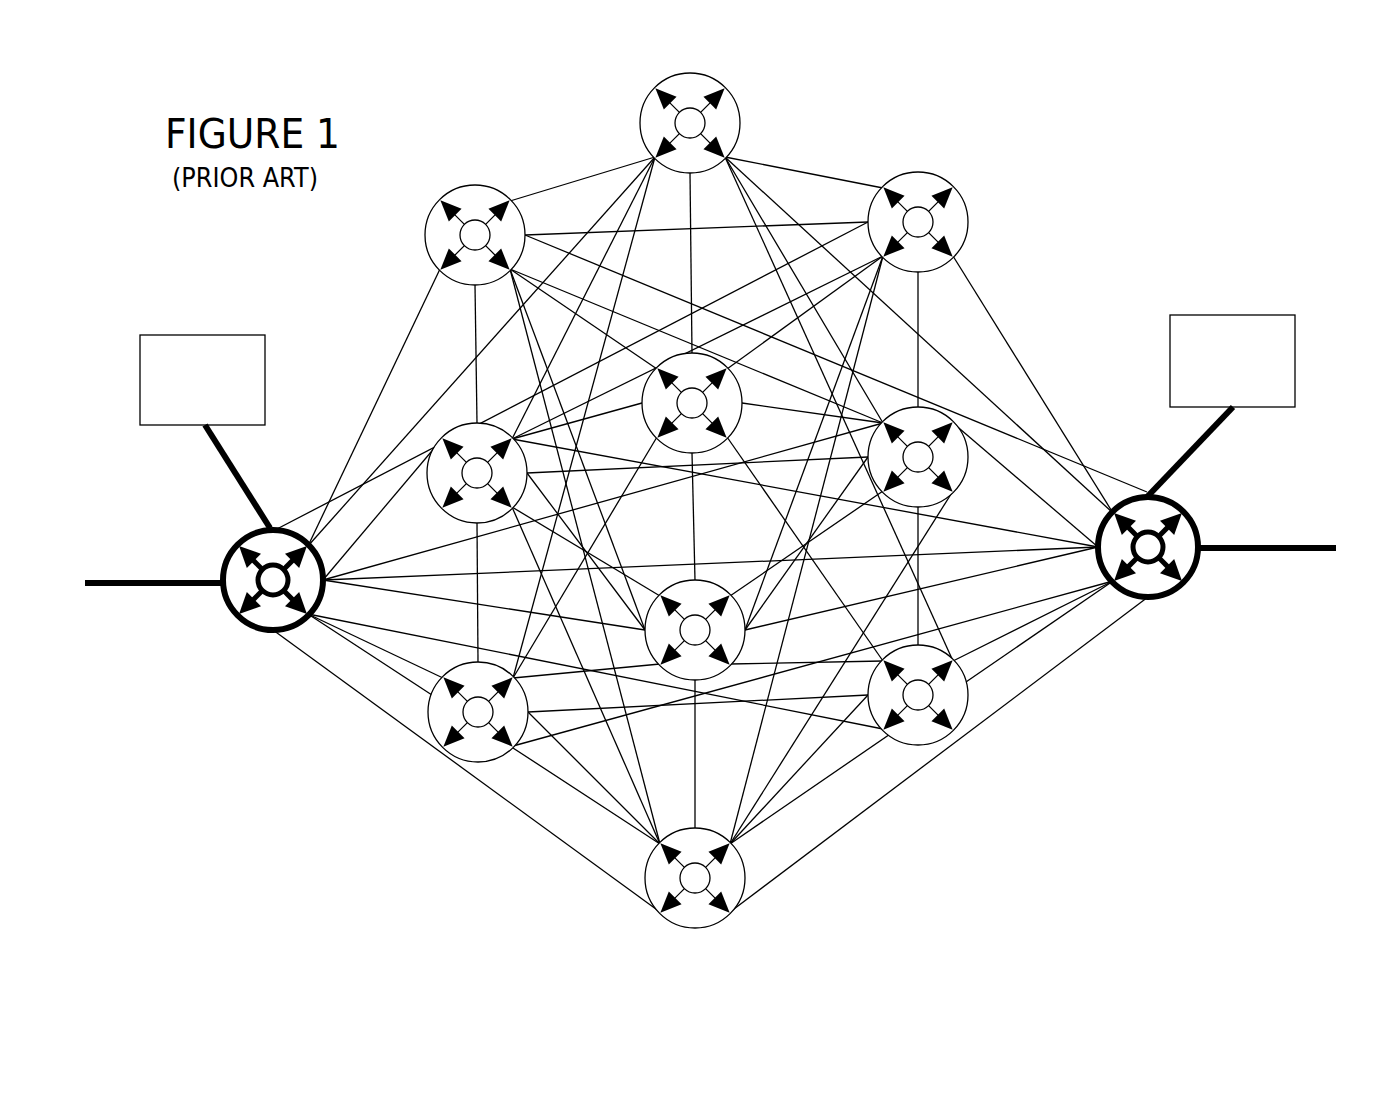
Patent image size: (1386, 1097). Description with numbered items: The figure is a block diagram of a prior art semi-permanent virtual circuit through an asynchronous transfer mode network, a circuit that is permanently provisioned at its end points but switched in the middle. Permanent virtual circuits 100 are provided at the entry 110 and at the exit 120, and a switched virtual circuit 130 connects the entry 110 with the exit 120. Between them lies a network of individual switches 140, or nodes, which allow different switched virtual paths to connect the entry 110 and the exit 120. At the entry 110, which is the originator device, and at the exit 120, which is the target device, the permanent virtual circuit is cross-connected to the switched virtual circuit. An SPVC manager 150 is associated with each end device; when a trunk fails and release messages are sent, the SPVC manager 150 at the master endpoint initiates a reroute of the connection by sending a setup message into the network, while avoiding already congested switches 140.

The permanent virtual circuit 100 is at (152, 565).
The entry 110 is at (228, 554).
The exit 120 is at (1196, 516).
The switched virtual circuit 130 is at (804, 512).
The switches 140 is at (706, 74).
The SPVC manager 150 is at (192, 332).